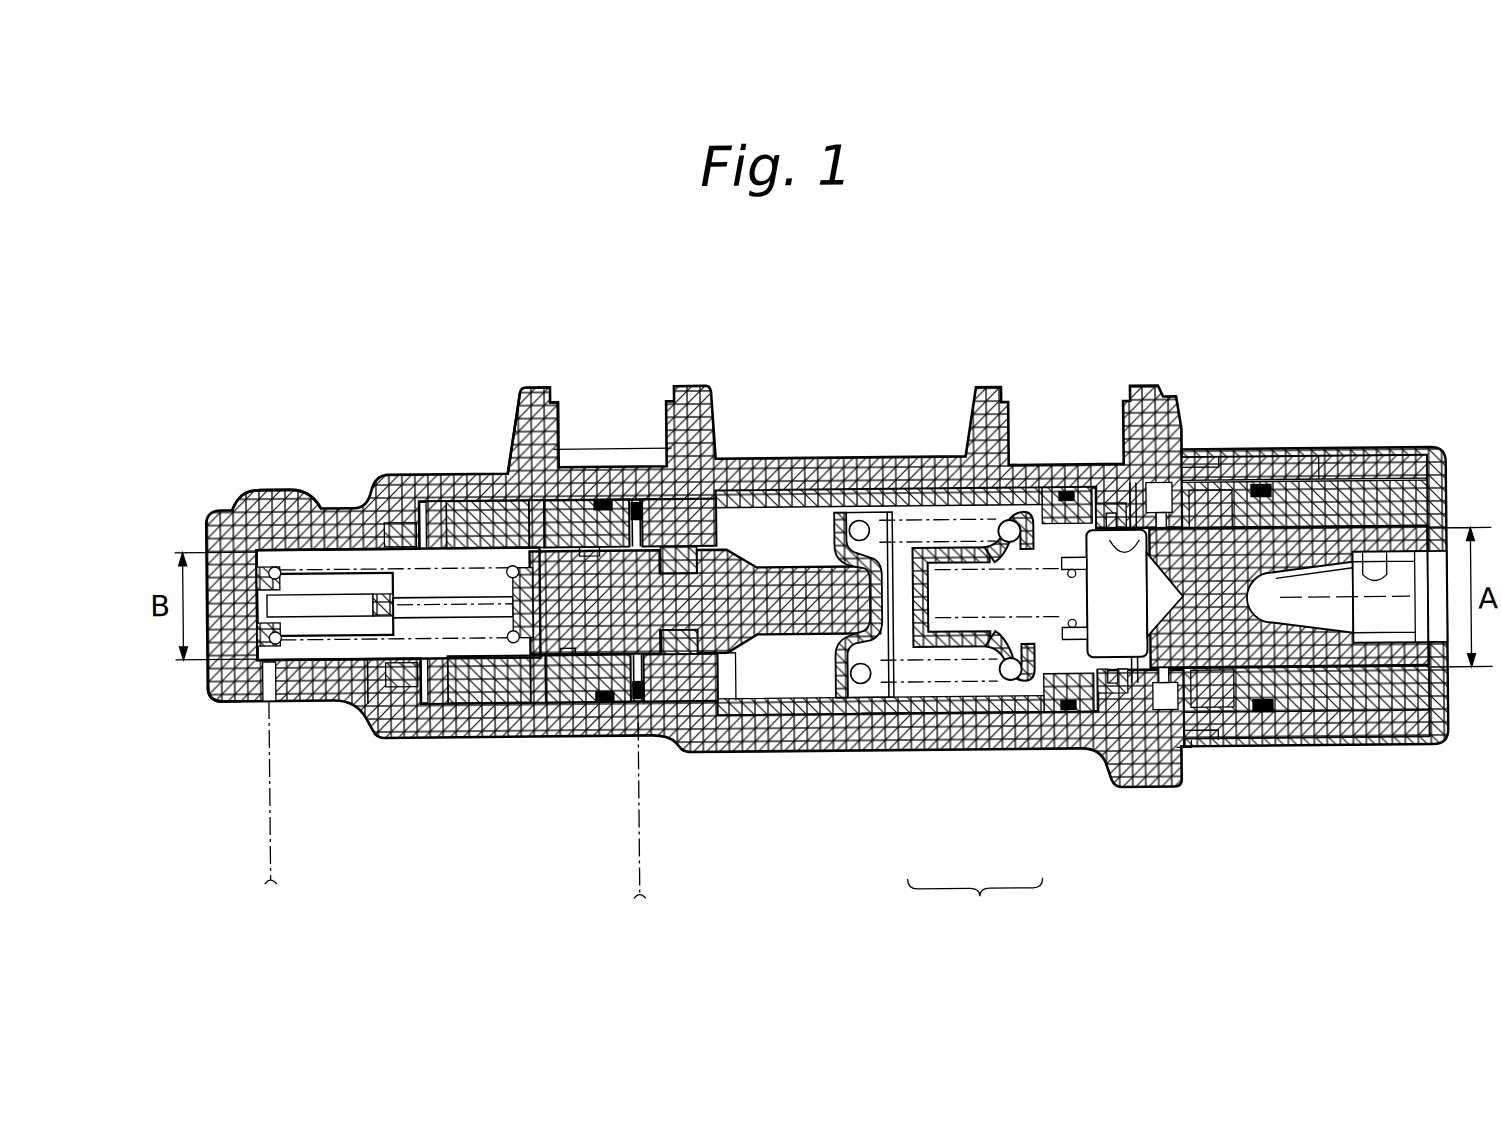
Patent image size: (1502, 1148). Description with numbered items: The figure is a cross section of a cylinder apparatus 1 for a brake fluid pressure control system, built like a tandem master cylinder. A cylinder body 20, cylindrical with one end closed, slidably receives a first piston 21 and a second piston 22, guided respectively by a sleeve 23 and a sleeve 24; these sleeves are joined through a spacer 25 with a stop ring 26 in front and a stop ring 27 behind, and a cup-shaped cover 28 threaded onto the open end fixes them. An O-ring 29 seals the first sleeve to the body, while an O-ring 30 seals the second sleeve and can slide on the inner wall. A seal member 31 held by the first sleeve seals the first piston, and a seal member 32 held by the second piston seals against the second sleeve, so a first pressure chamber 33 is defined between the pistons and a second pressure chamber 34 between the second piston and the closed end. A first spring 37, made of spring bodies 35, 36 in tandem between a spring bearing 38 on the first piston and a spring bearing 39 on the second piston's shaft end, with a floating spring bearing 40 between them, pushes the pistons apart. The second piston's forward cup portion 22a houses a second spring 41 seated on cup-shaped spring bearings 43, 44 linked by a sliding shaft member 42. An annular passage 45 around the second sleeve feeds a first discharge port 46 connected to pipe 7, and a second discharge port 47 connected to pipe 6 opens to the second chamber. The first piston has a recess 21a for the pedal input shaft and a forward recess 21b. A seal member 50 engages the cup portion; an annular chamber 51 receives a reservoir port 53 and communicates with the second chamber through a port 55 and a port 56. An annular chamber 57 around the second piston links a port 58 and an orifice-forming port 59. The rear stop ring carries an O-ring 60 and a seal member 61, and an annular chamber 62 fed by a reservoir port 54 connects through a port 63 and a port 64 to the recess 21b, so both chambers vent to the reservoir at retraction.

The cylinder apparatus 1 is at (888, 313).
The cylinder body 20 is at (772, 460).
The first piston 21 is at (1303, 540).
The recess 21a is at (1384, 572).
The recess 21b is at (1165, 409).
The second piston 22 is at (815, 585).
The cup portion 22a is at (374, 671).
The sleeve 23 is at (1195, 494).
The sleeve 24 is at (490, 498).
The spacer 25 is at (876, 722).
The stop ring 26 is at (729, 700).
The stop ring 27 is at (1061, 695).
The cover 28 is at (1418, 752).
The O-ring 29 is at (1310, 750).
The O-ring 30 is at (611, 700).
The seal member 31 is at (1240, 706).
The seal member 32 is at (712, 500).
The first pressure chamber 33 is at (803, 715).
The second pressure chamber 34 is at (282, 543).
The spring body 35 is at (988, 718).
The spring body 36 is at (946, 718).
The first spring 37 is at (975, 904).
The spring bearing 38 is at (1070, 548).
The spring bearing 39 is at (868, 491).
The spring bearing 40 is at (966, 472).
The second spring 41 is at (315, 560).
The shaft member 42 is at (211, 684).
The spring bearing 43 is at (326, 686).
The spring bearing 44 is at (503, 625).
The annular passage 45 is at (668, 500).
The first discharge port 46 is at (638, 722).
The second discharge port 47 is at (263, 695).
The seal member 50 is at (407, 510).
The annular chamber 51 is at (567, 680).
The reservoir port 53 is at (580, 480).
The reservoir port 54 is at (1105, 500).
The port 55 is at (453, 688).
The port 56 is at (437, 498).
The annular chamber 57 is at (590, 690).
The port 58 is at (510, 498).
The port 59 is at (635, 498).
The O-ring 60 is at (1068, 492).
The seal member 61 is at (1112, 705).
The annular chamber 62 is at (1142, 725).
The port 63 is at (1170, 720).
The port 64 is at (1190, 748).
The pipe 6 is at (268, 836).
The pipe 7 is at (637, 875).